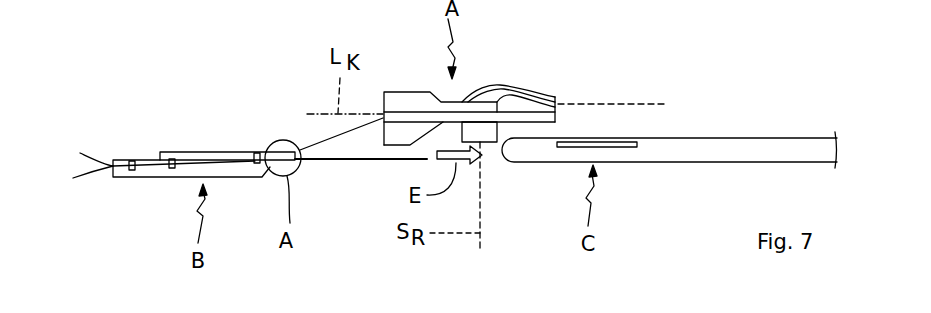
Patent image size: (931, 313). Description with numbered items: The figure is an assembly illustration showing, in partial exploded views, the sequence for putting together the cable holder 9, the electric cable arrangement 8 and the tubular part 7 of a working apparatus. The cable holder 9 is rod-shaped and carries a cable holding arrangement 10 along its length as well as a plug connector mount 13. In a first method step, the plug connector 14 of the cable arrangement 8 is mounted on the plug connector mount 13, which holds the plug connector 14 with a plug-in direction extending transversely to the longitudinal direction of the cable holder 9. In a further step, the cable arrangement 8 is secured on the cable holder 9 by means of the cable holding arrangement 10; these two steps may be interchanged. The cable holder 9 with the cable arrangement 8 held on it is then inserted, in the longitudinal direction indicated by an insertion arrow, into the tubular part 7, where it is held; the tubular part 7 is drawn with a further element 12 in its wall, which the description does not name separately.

The tubular part 7 is at (685, 150).
The electric cable arrangement 8 is at (100, 157).
The cable holder 9 is at (202, 155).
The cable holding arrangement 10 is at (170, 160).
The sensor element 12 is at (597, 143).
The plug connector mount 13 is at (457, 102).
The plug connector 14 is at (490, 125).